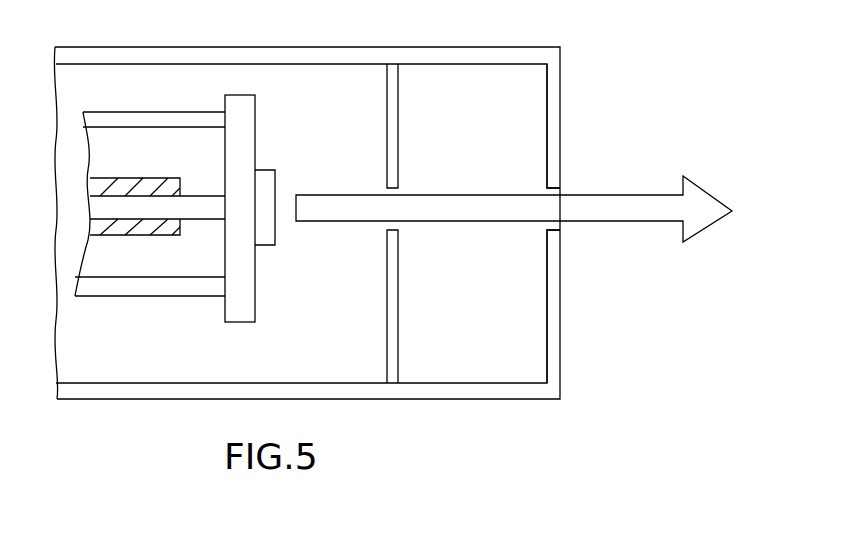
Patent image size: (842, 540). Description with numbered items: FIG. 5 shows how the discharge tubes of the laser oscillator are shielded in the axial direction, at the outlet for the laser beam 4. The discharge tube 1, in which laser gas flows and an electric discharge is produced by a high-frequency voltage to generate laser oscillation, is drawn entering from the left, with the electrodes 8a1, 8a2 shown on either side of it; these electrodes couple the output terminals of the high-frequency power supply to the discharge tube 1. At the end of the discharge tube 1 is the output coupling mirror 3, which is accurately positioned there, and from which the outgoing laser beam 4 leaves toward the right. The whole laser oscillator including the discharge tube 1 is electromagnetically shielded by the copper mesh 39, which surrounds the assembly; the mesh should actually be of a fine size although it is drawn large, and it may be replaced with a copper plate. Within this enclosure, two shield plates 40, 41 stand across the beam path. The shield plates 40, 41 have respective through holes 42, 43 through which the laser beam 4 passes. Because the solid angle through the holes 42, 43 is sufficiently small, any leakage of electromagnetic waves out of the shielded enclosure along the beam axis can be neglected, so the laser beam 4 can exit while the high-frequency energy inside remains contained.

The copper mesh 39 is at (216, 46).
The shield plate 40 is at (387, 298).
The shield plate 41 is at (547, 291).
The through hole 42 is at (402, 189).
The through hole 43 is at (546, 193).
The electrode 8a1 is at (110, 178).
The electrode 8a2 is at (108, 235).
The discharge tube 1 is at (200, 195).
The output coupling mirror 3 is at (272, 170).
The outgoing laser beam 4 is at (650, 222).